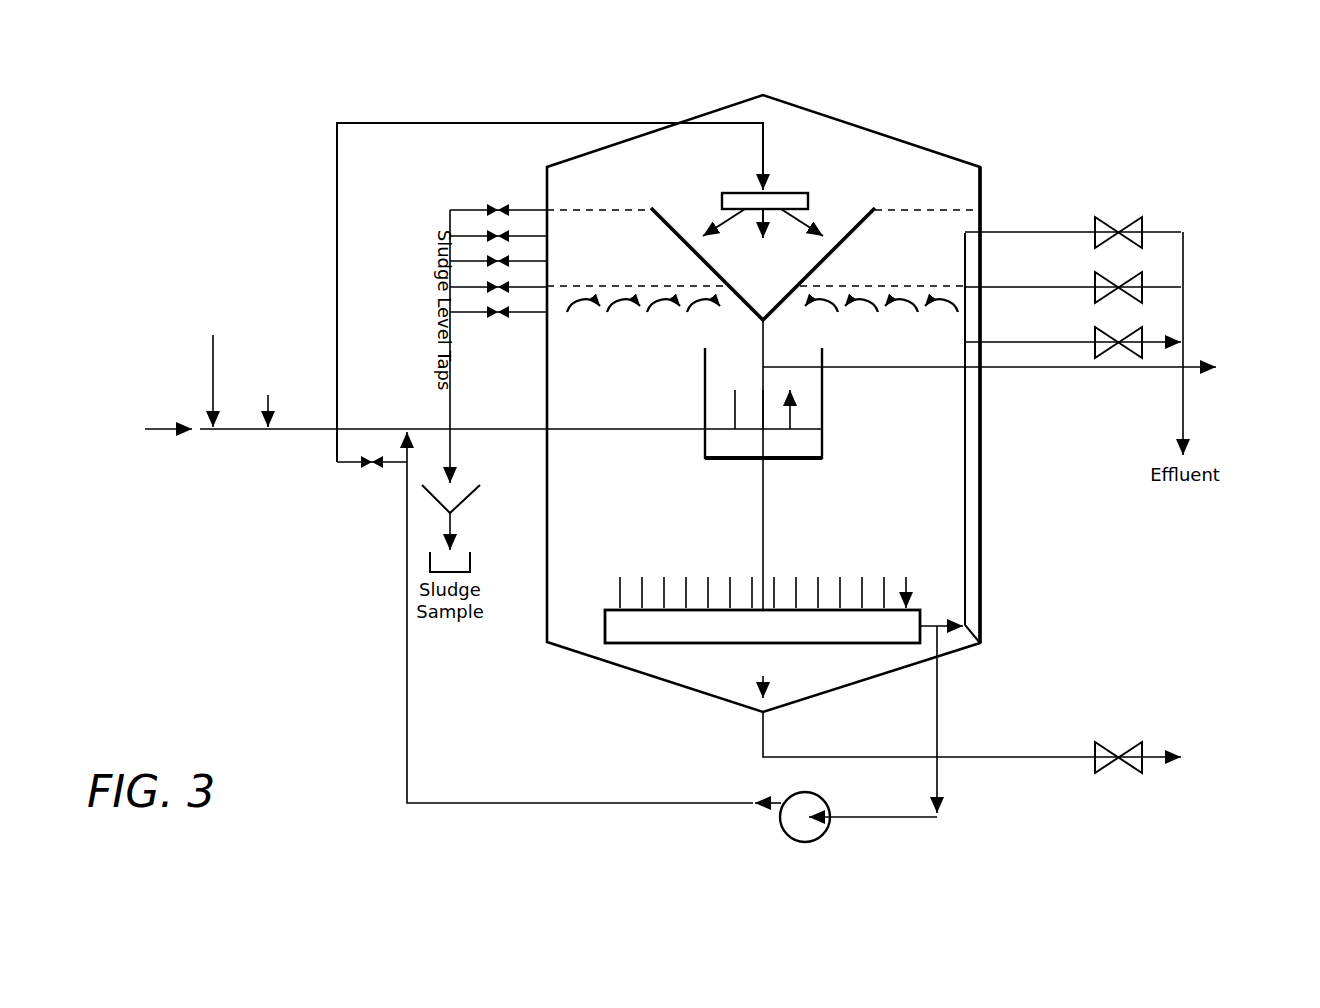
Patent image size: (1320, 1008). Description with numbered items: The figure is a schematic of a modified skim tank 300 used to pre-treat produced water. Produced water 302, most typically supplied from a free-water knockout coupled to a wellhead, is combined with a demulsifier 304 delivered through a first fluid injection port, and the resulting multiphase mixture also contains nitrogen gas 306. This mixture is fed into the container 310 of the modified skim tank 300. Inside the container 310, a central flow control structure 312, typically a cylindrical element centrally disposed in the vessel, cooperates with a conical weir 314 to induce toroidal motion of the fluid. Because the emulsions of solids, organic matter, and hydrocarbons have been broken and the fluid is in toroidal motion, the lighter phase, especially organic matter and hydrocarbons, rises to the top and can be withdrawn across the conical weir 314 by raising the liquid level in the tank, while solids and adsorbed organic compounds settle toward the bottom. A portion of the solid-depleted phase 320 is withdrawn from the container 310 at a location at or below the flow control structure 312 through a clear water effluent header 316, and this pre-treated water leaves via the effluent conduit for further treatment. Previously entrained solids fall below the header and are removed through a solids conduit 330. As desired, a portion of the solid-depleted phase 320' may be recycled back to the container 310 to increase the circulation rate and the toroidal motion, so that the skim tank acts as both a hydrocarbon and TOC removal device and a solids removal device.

The modified skim tank 300 is at (985, 112).
The produced water 302 is at (95, 457).
The demulsifier 304 is at (280, 342).
The nitrogen gas 306 is at (185, 272).
The container 310 is at (980, 432).
The central flow control structure 312 is at (823, 415).
The conical weir 314 is at (848, 222).
The clear water effluent header 316 is at (643, 643).
The solid-depleted phase (effluent conduit) 320 is at (1012, 438).
The portion of solid-depleted phase 320' is at (625, 637).
The solids conduit 330 is at (1010, 757).